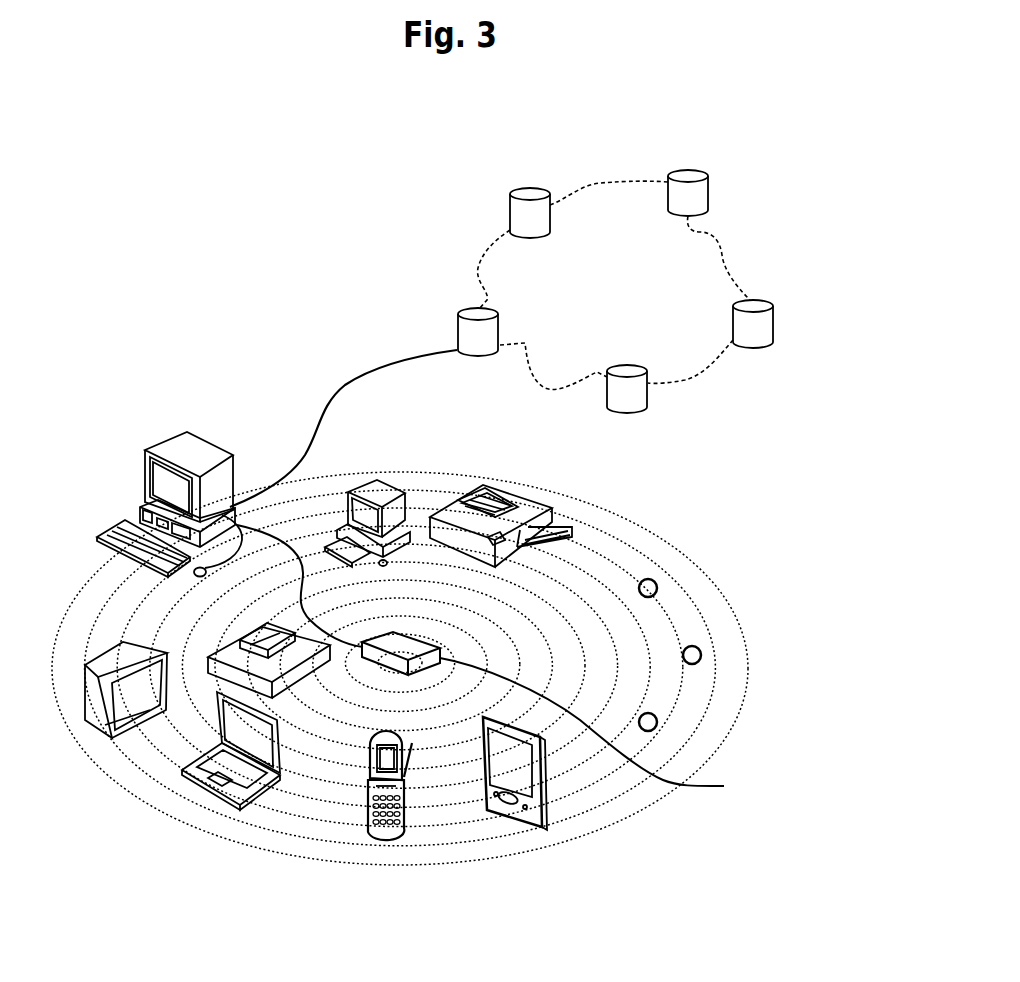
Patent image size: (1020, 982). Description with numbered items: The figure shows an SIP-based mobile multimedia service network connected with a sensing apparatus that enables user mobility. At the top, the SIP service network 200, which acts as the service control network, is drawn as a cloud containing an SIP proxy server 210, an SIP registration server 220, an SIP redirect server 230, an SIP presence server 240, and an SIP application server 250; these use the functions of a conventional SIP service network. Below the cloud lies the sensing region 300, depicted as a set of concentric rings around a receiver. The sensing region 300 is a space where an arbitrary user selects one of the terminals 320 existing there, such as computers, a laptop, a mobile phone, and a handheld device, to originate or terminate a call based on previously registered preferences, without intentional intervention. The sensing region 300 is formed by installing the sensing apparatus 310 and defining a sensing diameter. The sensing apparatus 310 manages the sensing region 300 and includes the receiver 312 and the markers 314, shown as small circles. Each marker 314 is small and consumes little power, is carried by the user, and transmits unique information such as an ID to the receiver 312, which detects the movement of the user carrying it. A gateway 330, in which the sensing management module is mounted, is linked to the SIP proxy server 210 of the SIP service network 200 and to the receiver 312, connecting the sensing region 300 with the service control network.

The SIP service network 200 is at (605, 185).
The SIP proxy server 210 is at (458, 326).
The SIP registration server 220 is at (525, 187).
The SIP redirect server 230 is at (653, 395).
The SIP presence server 240 is at (756, 347).
The SIP application server 250 is at (689, 170).
The sensing region 300 is at (670, 544).
The sensing apparatus 310 is at (752, 808).
The receiver 312 is at (502, 661).
The markers 314 is at (657, 592).
The terminals 320 is at (98, 732).
The gateway 330 is at (145, 478).